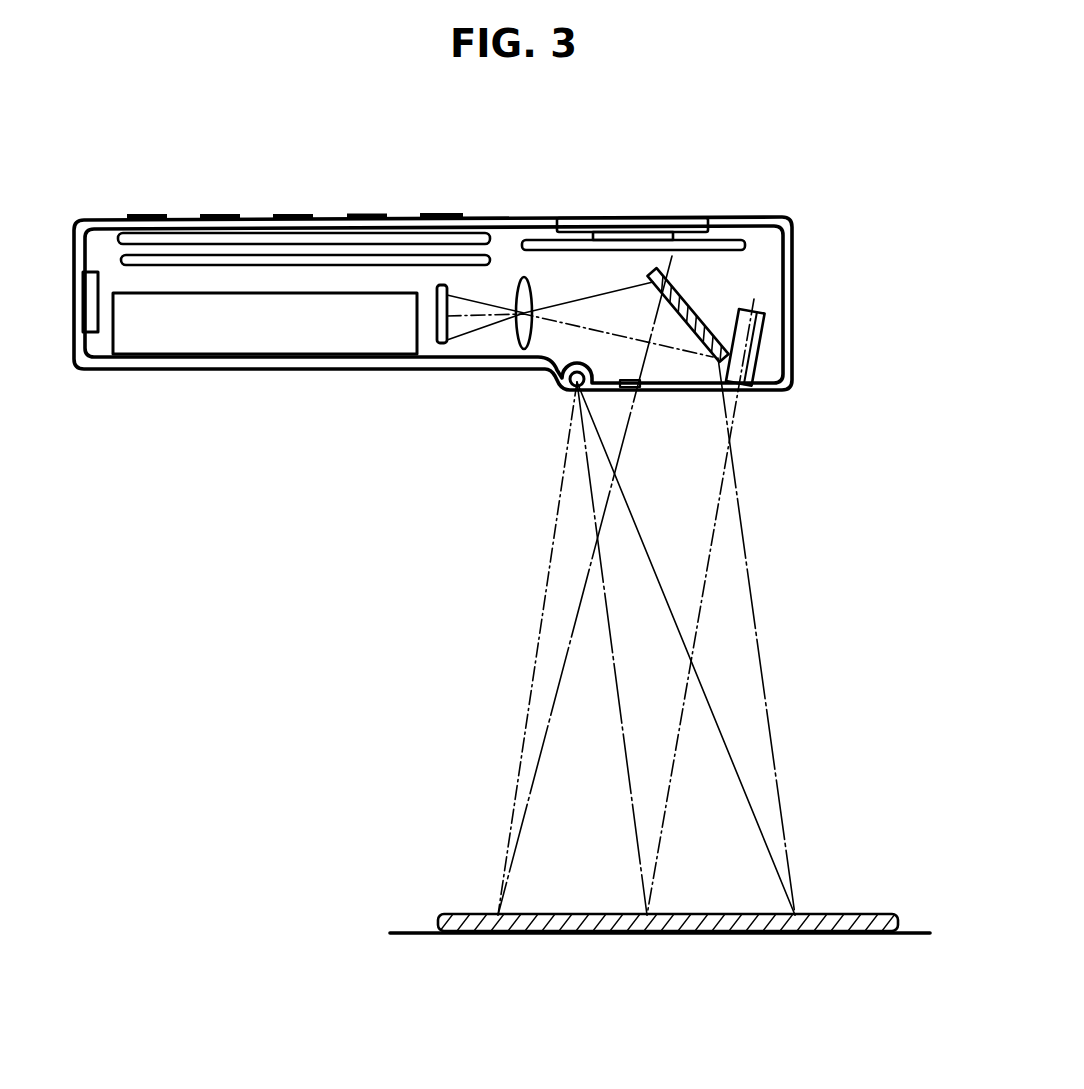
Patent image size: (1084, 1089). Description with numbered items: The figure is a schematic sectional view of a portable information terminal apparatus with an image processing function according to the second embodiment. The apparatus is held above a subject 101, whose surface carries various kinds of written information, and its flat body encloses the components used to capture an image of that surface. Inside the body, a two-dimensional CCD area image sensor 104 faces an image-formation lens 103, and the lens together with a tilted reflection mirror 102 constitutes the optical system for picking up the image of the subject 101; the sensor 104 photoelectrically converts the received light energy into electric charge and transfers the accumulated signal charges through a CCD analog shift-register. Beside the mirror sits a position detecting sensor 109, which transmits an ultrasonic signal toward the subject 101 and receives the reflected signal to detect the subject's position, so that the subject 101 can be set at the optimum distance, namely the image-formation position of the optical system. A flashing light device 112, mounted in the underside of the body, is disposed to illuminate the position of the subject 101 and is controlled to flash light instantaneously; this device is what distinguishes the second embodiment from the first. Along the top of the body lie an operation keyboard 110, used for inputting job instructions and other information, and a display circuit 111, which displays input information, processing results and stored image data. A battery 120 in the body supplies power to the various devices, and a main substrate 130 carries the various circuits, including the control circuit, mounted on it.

The subject 101 is at (876, 913).
The reflection mirror 102 is at (683, 298).
The image-formation lens 103 is at (519, 351).
The two-dimensional CCD area image sensor 104 is at (442, 348).
The position detecting sensor 109 is at (759, 352).
The operation keyboard 110 is at (183, 234).
The display circuit 111 is at (580, 217).
The flashing light device 112 is at (568, 390).
The battery 120 is at (150, 344).
The main substrate 130 is at (116, 257).